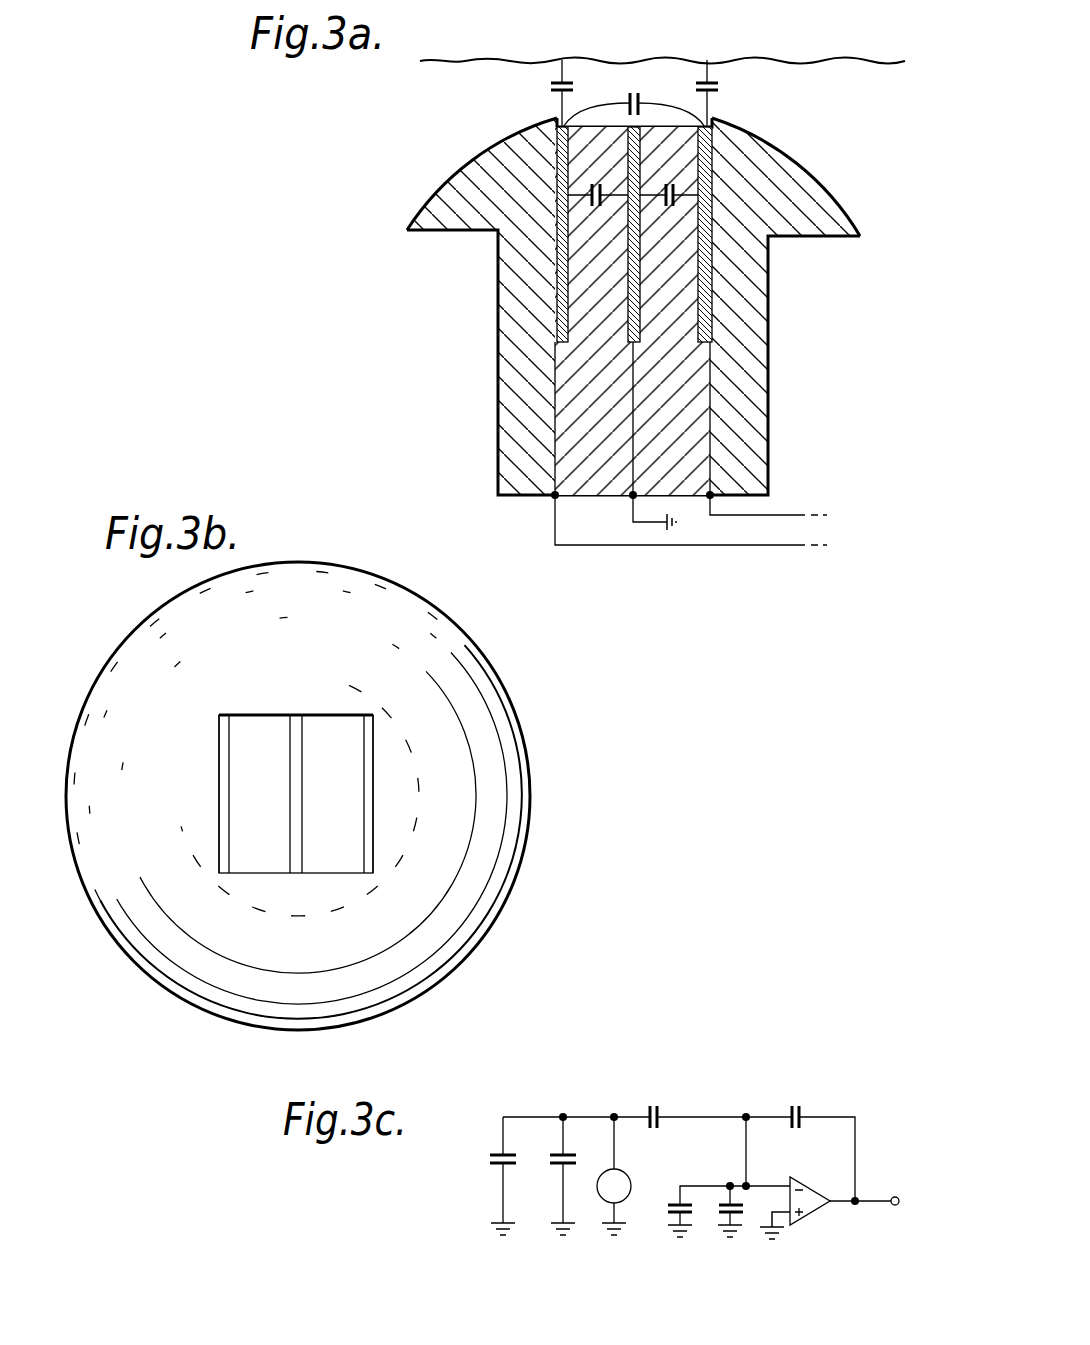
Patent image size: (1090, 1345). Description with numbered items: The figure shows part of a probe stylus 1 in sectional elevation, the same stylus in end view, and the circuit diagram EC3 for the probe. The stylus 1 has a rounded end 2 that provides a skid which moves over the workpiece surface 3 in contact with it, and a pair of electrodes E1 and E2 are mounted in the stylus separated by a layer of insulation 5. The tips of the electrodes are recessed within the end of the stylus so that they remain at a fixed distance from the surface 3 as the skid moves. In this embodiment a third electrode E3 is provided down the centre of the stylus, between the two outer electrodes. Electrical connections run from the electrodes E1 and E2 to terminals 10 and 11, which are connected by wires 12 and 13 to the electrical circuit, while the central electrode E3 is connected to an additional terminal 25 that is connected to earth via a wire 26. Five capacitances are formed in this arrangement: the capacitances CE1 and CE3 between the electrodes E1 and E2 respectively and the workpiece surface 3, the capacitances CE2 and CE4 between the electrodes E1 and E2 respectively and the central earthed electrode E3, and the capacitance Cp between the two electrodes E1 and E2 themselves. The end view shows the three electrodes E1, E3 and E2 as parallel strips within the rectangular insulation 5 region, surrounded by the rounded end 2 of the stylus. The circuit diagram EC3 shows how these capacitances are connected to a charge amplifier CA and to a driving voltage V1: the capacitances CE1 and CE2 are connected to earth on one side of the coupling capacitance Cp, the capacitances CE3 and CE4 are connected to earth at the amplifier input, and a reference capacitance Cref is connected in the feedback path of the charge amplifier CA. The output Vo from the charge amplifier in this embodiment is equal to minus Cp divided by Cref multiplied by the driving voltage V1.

In FIG. 3A, the probe stylus 1 is at (752, 405).
In FIG. 3A, the rounded end 2 is at (815, 208).
In FIG. 3B, the rounded end 2 is at (468, 885).
In FIG. 3A, the workpiece surface 3 is at (816, 60).
In FIG. 3A, the layer of insulation 5 is at (568, 383).
In FIG. 3B, the layer of insulation 5 is at (334, 730).
In FIG. 3A, the terminal 10 is at (554, 498).
In FIG. 3A, the terminal 11 is at (712, 493).
In FIG. 3A, the wire 12 is at (747, 547).
In FIG. 3C, the wire 12 is at (637, 1112).
In FIG. 3A, the wire 13 is at (796, 515).
In FIG. 3C, the wire 13 is at (705, 1114).
In FIG. 3A, the additional terminal 25 is at (631, 498).
In FIG. 3A, the wire 26 is at (645, 546).
In FIG. 3C, the wire 26 is at (557, 1200).
In FIG. 3A, the electrode E1 is at (565, 270).
In FIG. 3B, the electrode E1 is at (224, 780).
In FIG. 3A, the electrode E2 is at (706, 283).
In FIG. 3B, the electrode E2 is at (370, 768).
In FIG. 3A, the third electrode E3 is at (642, 318).
In FIG. 3B, the third electrode E3 is at (296, 757).
In FIG. 3A, the capacitance CE1 is at (553, 87).
In FIG. 3C, the capacitance CE1 is at (500, 1150).
In FIG. 3A, the capacitance CE2 is at (592, 193).
In FIG. 3C, the capacitance CE2 is at (557, 1150).
In FIG. 3A, the capacitance CE3 is at (719, 86).
In FIG. 3C, the capacitance CE3 is at (673, 1215).
In FIG. 3A, the capacitance CE4 is at (674, 193).
In FIG. 3C, the capacitance CE4 is at (740, 1218).
In FIG. 3A, the capacitance Cp is at (639, 96).
In FIG. 3C, the capacitance Cp is at (656, 1104).
In FIG. 3C, the reference capacitance Cref is at (790, 1104).
In FIG. 3C, the charge amplifier CA is at (833, 1157).
In FIG. 3C, the driving voltage V1 is at (632, 1186).
In FIG. 3C, the output Vo is at (872, 1186).
In FIG. 3C, the circuit diagram EC3 is at (845, 1083).